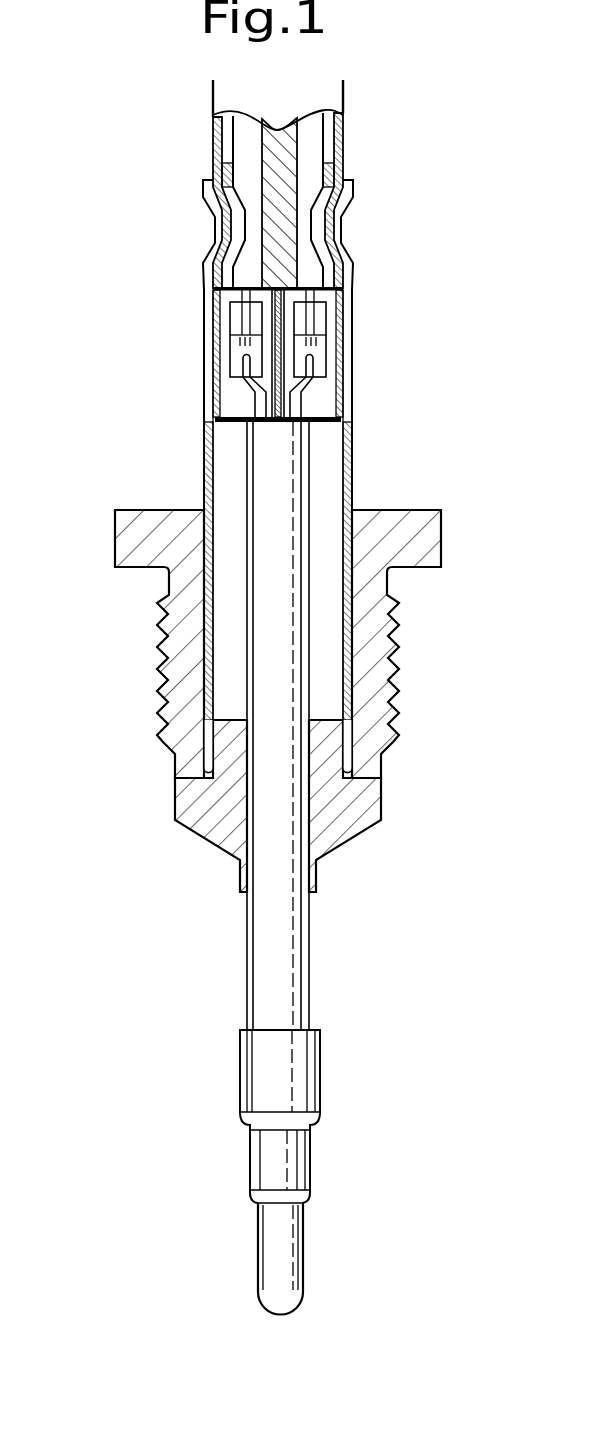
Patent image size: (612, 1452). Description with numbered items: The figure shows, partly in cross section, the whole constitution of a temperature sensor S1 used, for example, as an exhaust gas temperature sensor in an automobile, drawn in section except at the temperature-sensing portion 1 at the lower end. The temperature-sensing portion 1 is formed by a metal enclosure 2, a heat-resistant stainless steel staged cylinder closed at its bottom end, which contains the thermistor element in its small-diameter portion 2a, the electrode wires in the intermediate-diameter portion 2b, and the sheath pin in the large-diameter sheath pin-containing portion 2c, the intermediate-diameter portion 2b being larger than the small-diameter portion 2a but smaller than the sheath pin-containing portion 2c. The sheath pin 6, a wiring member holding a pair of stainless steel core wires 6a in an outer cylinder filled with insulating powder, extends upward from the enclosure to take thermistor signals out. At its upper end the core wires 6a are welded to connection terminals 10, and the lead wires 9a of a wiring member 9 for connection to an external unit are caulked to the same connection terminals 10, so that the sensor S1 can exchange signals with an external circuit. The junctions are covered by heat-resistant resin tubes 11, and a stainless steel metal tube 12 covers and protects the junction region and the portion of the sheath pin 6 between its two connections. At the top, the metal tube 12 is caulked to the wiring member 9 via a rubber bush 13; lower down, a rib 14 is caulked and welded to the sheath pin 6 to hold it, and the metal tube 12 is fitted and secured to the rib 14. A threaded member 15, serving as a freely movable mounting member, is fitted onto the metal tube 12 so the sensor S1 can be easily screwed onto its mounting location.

The temperature sensor S1 is at (130, 268).
The temperature-sensing portion 1 is at (245, 1301).
The metal enclosure 2 is at (232, 1072).
The small-diameter portion 2a is at (303, 1263).
The intermediate-diameter portion 2b is at (310, 1157).
The sheath pin-containing portion 2c is at (320, 1075).
The sheath pin 6 is at (290, 925).
The core wires 6a is at (257, 393).
The wiring member for connection to an external unit 9 is at (330, 97).
The lead wires 9a is at (230, 143).
The connection terminals 10 is at (235, 350).
The resin tubes 11 is at (247, 428).
The metal tube 12 is at (346, 470).
The rubber bush 13 is at (330, 167).
The rib 14 is at (358, 805).
The threaded member 15 is at (425, 541).